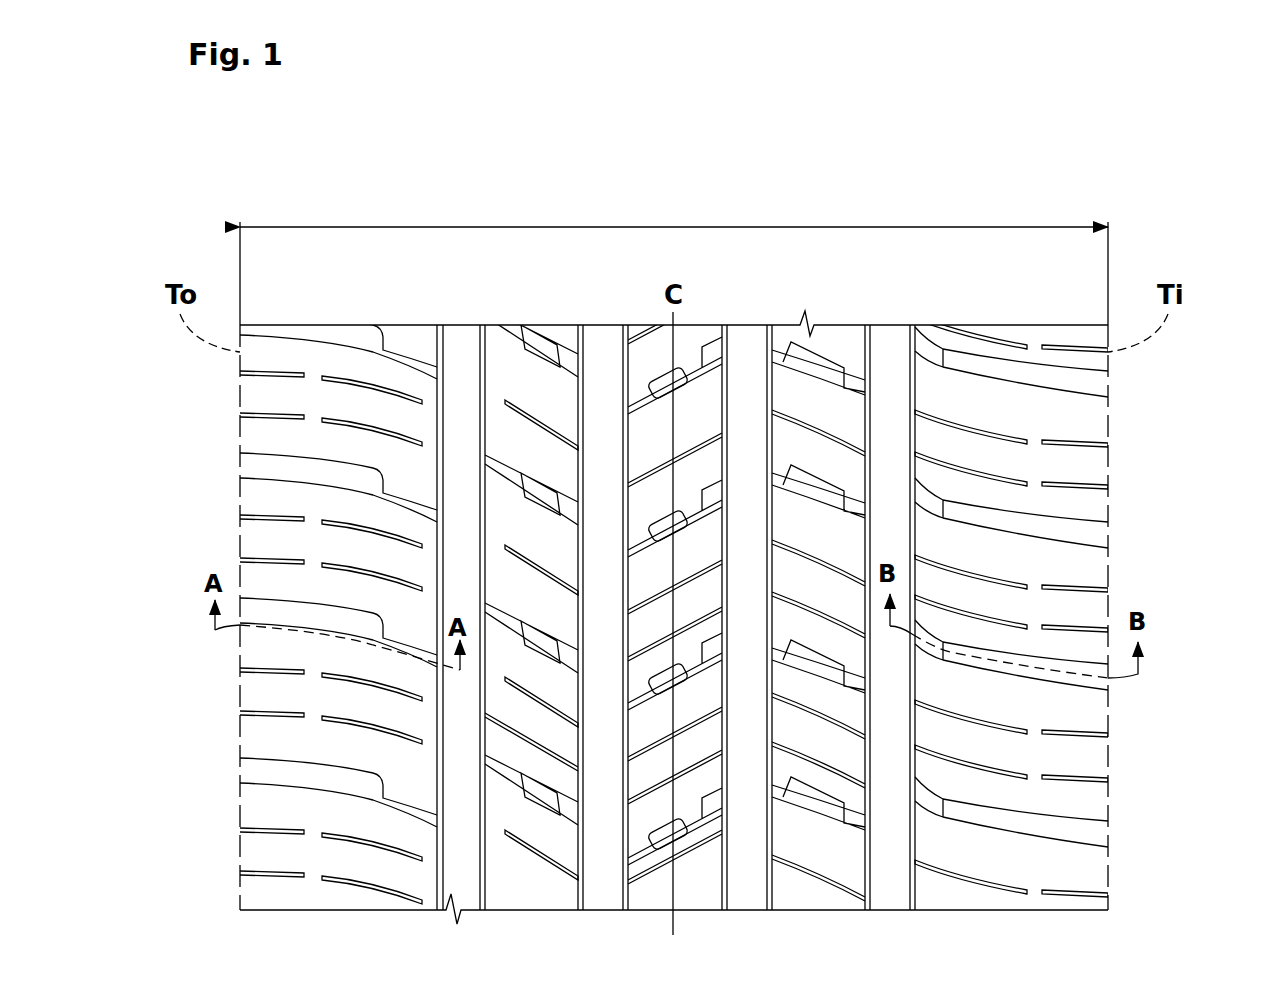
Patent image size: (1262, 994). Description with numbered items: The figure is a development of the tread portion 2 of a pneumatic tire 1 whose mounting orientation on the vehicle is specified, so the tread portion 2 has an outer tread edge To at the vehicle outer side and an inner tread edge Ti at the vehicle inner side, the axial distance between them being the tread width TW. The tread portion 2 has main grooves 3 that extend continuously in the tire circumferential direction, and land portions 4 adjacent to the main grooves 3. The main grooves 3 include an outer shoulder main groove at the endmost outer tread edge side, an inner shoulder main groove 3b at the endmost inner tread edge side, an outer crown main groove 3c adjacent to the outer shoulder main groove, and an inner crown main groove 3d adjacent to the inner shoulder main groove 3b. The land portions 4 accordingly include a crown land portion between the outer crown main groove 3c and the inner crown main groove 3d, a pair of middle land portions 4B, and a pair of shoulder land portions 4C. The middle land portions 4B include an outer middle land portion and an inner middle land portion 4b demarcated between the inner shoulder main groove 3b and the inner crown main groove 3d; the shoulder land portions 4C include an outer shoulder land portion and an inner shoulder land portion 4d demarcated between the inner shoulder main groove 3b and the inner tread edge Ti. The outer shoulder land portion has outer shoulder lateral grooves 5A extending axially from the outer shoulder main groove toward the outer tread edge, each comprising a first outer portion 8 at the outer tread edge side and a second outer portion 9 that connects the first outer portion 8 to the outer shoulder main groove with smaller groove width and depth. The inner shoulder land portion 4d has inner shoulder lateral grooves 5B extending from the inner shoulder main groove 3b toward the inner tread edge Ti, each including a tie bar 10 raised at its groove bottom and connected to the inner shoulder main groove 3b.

The tire 1 is at (1196, 257).
The tread portion 2 is at (1121, 276).
The main grooves 3 is at (460, 362).
The outer crown main groove 3c is at (600, 362).
The inner crown main groove 3d is at (749, 362).
The inner shoulder main groove 3b is at (891, 362).
The shoulder land portions 4C is at (308, 586).
The middle land portions 4B is at (511, 365).
The land portions 4 is at (698, 360).
The inner middle land portion 4b is at (832, 360).
The inner shoulder land portion 4d is at (1049, 631).
The outer shoulder lateral grooves 5A is at (300, 464).
The inner shoulder lateral grooves 5B is at (1040, 530).
The first outer portion 8 is at (308, 777).
The second outer portion 9 is at (410, 808).
The tie bar 10 is at (925, 497).